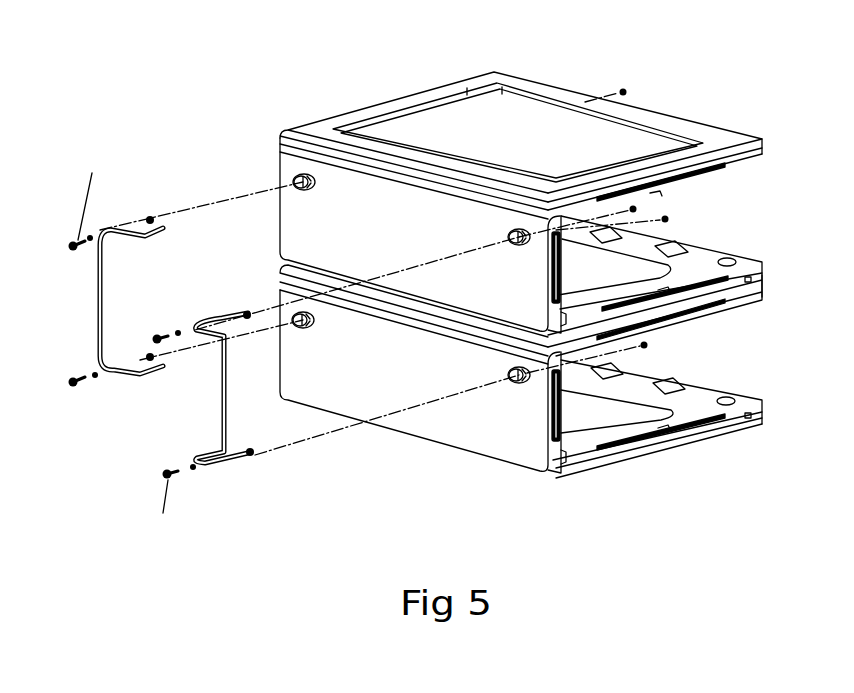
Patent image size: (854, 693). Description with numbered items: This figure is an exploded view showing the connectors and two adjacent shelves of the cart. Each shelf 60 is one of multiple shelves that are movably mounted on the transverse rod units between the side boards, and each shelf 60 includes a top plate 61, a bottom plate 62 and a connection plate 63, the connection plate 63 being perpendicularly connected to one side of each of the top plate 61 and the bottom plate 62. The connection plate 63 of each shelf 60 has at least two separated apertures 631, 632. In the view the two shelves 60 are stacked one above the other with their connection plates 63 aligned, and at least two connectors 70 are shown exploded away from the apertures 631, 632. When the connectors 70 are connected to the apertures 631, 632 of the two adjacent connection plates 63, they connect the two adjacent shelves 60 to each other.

The shelf 60 is at (507, 285).
The top plate 61 is at (741, 162).
The bottom plate 62 is at (745, 272).
The connection plate 63 is at (300, 225).
The aperture 631 is at (303, 175).
The aperture 632 is at (522, 229).
The connector 70 is at (148, 236).